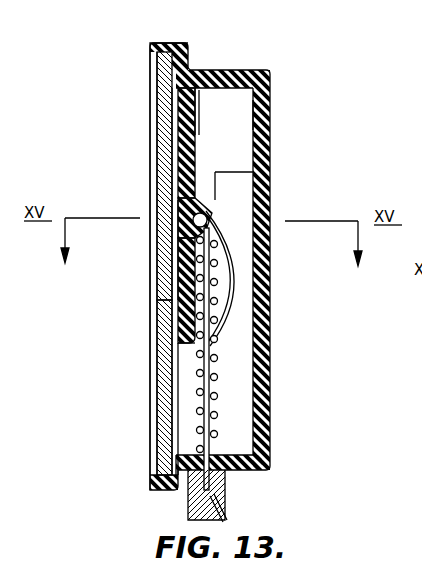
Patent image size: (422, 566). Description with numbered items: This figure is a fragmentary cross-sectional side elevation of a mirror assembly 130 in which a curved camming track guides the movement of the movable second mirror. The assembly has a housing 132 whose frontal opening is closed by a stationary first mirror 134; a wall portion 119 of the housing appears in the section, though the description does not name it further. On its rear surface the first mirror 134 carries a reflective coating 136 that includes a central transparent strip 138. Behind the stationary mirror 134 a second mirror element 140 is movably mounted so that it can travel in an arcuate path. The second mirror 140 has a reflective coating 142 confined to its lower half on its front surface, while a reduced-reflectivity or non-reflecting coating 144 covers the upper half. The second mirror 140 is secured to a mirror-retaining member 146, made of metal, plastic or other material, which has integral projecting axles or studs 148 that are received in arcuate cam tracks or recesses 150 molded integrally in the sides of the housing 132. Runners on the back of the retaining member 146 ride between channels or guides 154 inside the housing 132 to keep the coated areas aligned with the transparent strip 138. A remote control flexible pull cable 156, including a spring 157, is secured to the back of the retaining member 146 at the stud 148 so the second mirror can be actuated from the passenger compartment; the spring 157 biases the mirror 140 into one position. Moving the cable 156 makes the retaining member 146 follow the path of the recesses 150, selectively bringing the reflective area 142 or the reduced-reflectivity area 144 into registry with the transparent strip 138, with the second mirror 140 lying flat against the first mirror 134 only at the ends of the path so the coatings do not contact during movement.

The mirror assembly 130 is at (126, 48).
The housing 132 is at (218, 72).
The housing wall 119 is at (262, 116).
The reflective coating 136 is at (161, 118).
The stationary first mirror 134 is at (160, 350).
The transparent strip 138 is at (161, 264).
The reflective coating 142 is at (163, 304).
The second mirror element 140 is at (183, 103).
The reduced-reflectivity coating 144 is at (186, 158).
The axle or stud 148 is at (208, 218).
The arcuate cam track 150 is at (232, 283).
The channel or guide 154 is at (237, 344).
The remote control flexible pull cable 156 is at (197, 409).
The spring 157 is at (218, 377).
The mirror-retaining member 146 is at (190, 348).